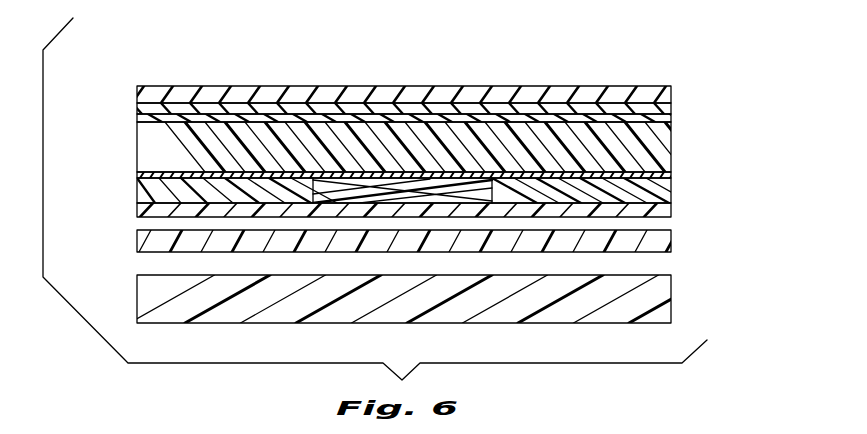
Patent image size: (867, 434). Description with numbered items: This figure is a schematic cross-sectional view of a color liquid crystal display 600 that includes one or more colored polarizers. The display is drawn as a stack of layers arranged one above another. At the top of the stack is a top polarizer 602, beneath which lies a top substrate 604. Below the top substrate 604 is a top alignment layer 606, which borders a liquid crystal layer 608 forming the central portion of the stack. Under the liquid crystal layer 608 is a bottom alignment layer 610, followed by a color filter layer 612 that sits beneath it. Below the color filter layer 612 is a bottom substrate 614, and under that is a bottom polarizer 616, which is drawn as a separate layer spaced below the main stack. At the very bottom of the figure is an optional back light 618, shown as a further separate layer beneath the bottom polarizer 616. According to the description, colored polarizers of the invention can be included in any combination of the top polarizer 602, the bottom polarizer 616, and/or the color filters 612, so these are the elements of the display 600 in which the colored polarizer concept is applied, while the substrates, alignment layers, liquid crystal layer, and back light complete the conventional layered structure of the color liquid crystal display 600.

The color liquid crystal display 600 is at (648, 45).
The top polarizer 602 is at (558, 92).
The top substrate 604 is at (670, 110).
The top alignment layer 606 is at (662, 120).
The liquid crystal layer 608 is at (145, 137).
The bottom alignment layer 610 is at (137, 177).
The color filter layer 612 is at (665, 187).
The bottom substrate 614 is at (665, 213).
The bottom polarizer 616 is at (153, 243).
The back light 618 is at (212, 320).